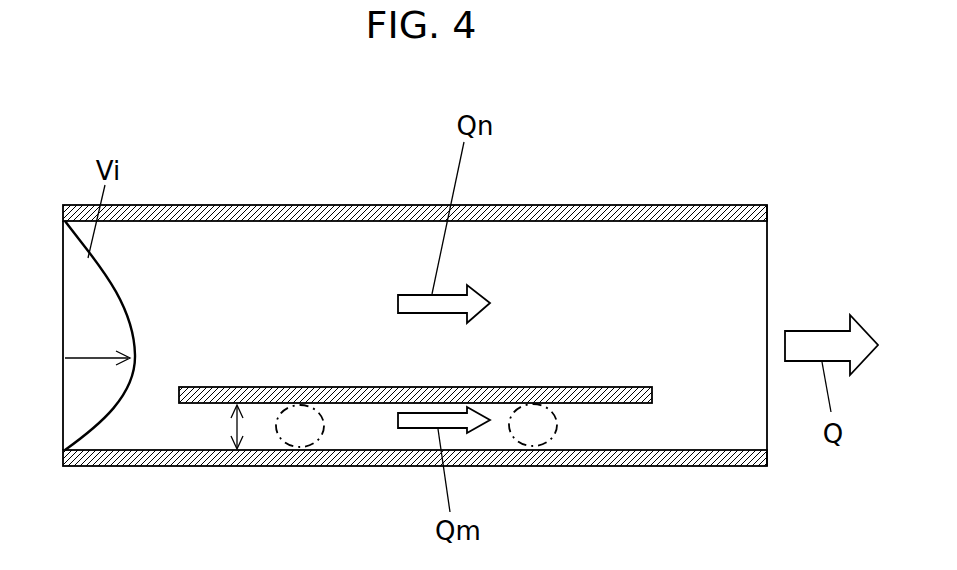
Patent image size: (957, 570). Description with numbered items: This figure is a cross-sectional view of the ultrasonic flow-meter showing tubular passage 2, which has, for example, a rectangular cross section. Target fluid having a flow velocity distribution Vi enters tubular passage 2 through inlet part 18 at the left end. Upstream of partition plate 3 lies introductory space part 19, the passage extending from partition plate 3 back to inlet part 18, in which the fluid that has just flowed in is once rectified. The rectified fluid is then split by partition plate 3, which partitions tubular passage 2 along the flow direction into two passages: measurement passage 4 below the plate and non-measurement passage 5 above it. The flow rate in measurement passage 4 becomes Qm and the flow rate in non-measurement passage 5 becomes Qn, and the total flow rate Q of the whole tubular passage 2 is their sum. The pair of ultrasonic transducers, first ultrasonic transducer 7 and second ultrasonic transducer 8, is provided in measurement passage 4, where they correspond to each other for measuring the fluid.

The tubular passage 2 is at (150, 308).
The partition plate 3 is at (218, 398).
The measurement passage 4 is at (622, 412).
The non-measurement passage 5 is at (578, 272).
The first ultrasonic transducer 7 is at (295, 426).
The second ultrasonic transducer 8 is at (540, 425).
The inlet part 18 is at (63, 332).
The introductory space part 19 is at (138, 388).